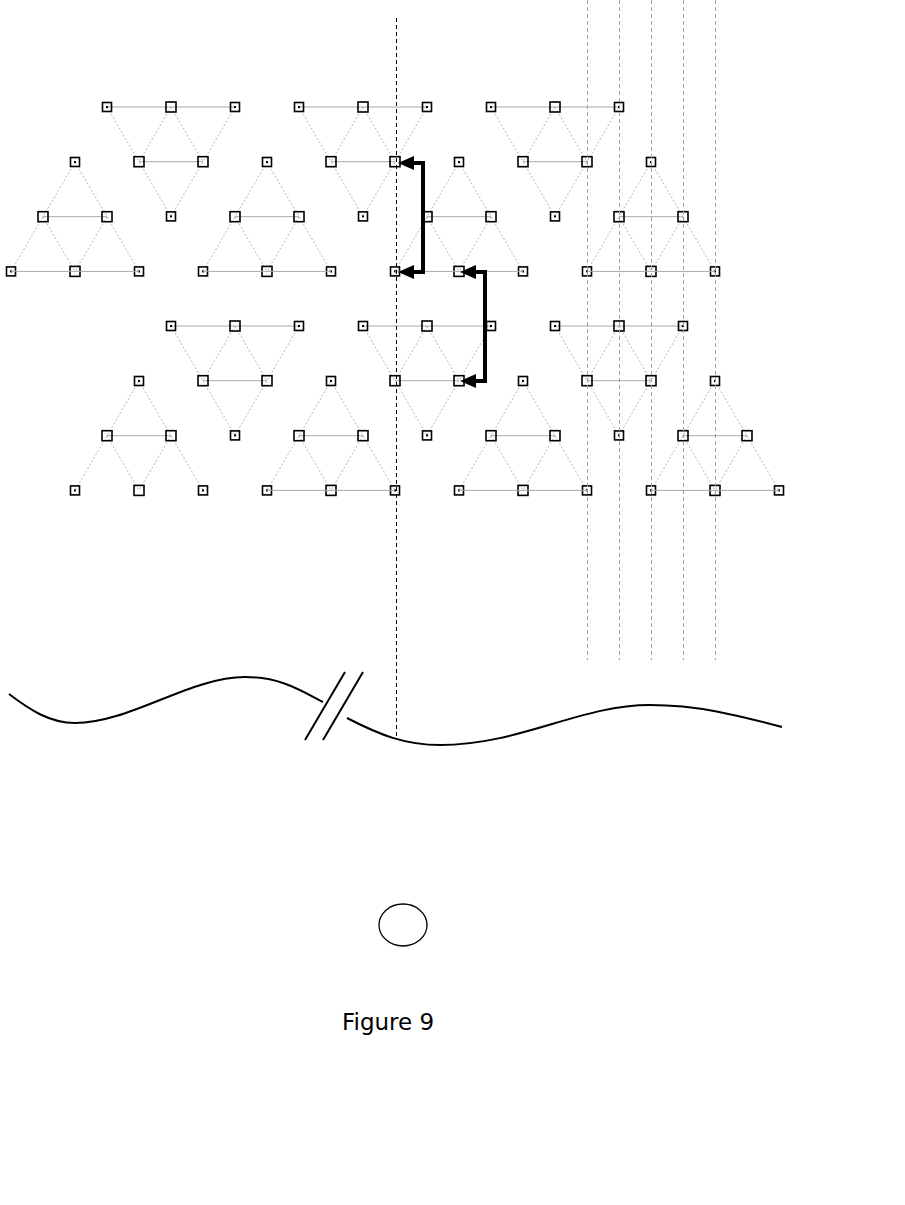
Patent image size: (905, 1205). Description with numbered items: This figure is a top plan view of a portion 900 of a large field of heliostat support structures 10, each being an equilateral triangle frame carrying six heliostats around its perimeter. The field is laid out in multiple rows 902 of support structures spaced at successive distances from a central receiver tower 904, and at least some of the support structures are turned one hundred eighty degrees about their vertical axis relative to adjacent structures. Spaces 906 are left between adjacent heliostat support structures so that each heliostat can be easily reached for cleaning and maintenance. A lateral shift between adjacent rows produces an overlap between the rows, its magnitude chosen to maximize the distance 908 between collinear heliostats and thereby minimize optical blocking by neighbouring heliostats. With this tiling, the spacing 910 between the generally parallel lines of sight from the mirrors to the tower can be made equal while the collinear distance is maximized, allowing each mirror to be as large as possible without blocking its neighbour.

The portion of field of heliostat support structures 900 is at (185, 46).
The rows of support structures 902 is at (78, 354).
The central receiver tower 904 is at (418, 935).
The spaces between adjacent heliostat support structures 906 is at (362, 307).
The distance between collinear heliostats 908 is at (465, 263).
The spacing between parallel lines of sight 910 is at (618, 28).
The heliostat support structure 10 is at (292, 516).